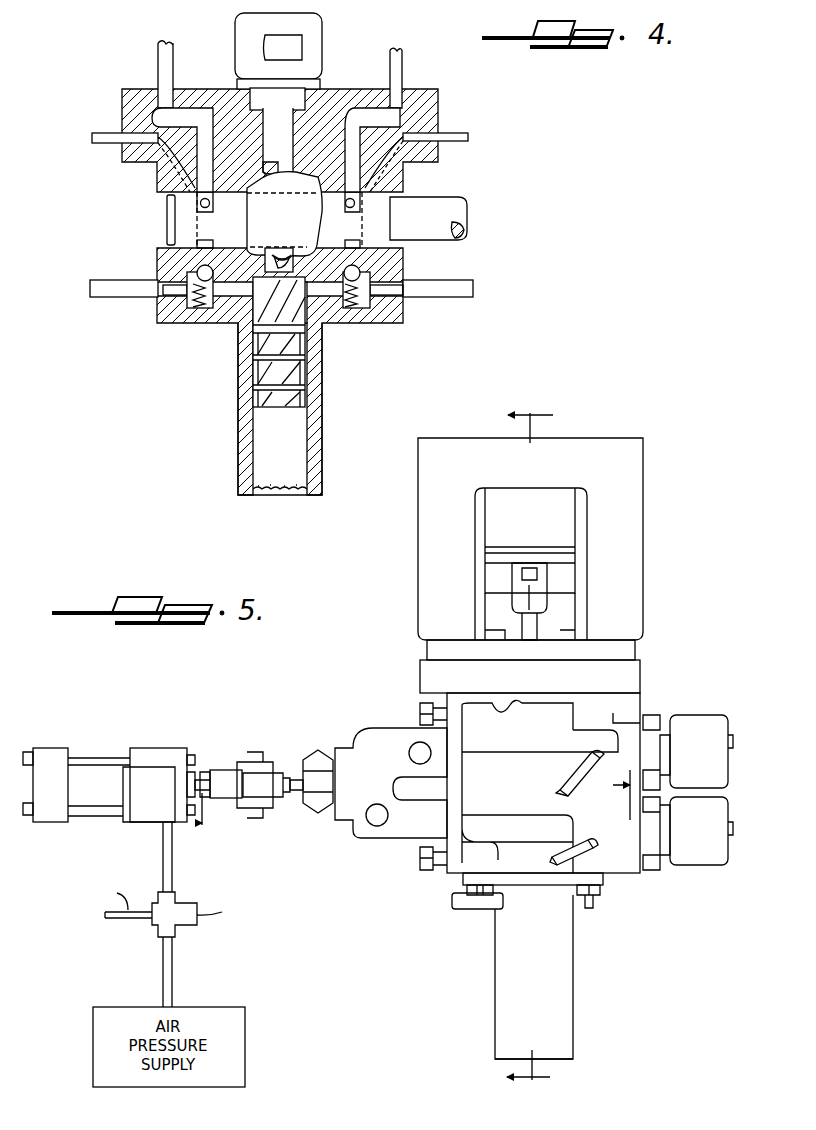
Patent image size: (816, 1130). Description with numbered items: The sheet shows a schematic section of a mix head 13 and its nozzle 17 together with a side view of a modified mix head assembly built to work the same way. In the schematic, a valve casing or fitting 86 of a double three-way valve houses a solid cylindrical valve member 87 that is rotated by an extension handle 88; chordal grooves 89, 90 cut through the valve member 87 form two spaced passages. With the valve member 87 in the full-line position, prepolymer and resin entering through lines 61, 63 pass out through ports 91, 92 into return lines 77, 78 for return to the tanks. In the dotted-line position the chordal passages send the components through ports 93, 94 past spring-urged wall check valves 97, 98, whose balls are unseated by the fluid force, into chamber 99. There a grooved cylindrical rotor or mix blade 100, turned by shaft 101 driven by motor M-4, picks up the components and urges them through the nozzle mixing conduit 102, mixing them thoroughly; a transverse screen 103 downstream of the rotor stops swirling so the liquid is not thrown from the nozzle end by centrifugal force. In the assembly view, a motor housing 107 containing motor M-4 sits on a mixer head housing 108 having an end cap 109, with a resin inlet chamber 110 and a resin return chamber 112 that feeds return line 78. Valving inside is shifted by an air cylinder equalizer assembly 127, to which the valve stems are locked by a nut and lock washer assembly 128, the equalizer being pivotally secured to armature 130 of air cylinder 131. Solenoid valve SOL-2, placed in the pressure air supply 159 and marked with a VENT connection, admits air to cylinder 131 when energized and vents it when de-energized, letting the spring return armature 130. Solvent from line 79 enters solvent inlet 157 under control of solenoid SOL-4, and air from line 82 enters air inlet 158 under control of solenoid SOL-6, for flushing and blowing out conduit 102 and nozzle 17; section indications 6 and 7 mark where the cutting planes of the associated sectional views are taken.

In FIG. 4, the mix head 13 is at (193, 330).
In FIG. 5, the mix head 13 is at (530, 783).
In FIG. 4, the nozzle 17 is at (330, 407).
In FIG. 5, the nozzle 17 is at (575, 978).
In FIG. 4, the line 61 is at (388, 84).
In FIG. 4, the line 63 is at (158, 62).
In FIG. 4, the return line 77 is at (450, 128).
In FIG. 4, the return line 78 is at (100, 133).
In FIG. 4, the line 79 is at (110, 297).
In FIG. 5, the line 79 is at (566, 786).
In FIG. 4, the line 82 is at (462, 297).
In FIG. 5, the line 82 is at (560, 852).
In FIG. 4, the valve casing or fitting 86 is at (210, 89).
In FIG. 4, the valve member 87 is at (292, 214).
In FIG. 4, the extension handle 88 is at (470, 216).
In FIG. 4, the chordal groove 89 is at (355, 205).
In FIG. 4, the chordal groove 90 is at (200, 208).
In FIG. 4, the port 91 is at (345, 203).
In FIG. 4, the port 92 is at (200, 203).
In FIG. 4, the port 93 is at (355, 256).
In FIG. 4, the port 94 is at (208, 254).
In FIG. 4, the wall check valve 97 is at (362, 270).
In FIG. 4, the wall check valve 98 is at (198, 272).
In FIG. 4, the chamber 99 is at (240, 296).
In FIG. 4, the mix blade 100 is at (257, 397).
In FIG. 4, the shaft 101 is at (277, 133).
In FIG. 5, the shaft 101 is at (535, 622).
In FIG. 4, the nozzle mixing conduit 102 is at (305, 352).
In FIG. 4, the transverse screen 103 is at (266, 492).
In FIG. 5, the transverse screen 103 is at (563, 1068).
In FIG. 5, the motor housing 107 is at (640, 514).
In FIG. 5, the mixer head housing 108 is at (425, 683).
In FIG. 5, the end cap 109 is at (345, 820).
In FIG. 5, the resin component inlet and inlet chamber 110 is at (420, 764).
In FIG. 5, the resin component outlet or return chamber 112 is at (386, 817).
In FIG. 5, the air cylinder equalizer assembly 127 is at (275, 760).
In FIG. 5, the nut and lock washer assembly 128 is at (293, 764).
In FIG. 5, the armature 130 is at (227, 770).
In FIG. 5, the air cylinder 131 is at (145, 812).
In FIG. 5, the solvent inlet 157 is at (590, 753).
In FIG. 5, the air inlet 158 is at (600, 855).
In FIG. 5, the pressure air supply 159 is at (165, 865).
In FIG. 5, the section line 6 is at (413, 808).
In FIG. 5, the section line 7 is at (516, 747).
In FIG. 4, the motor M-4 is at (318, 38).
In FIG. 5, the motor M-4 is at (531, 564).
In FIG. 5, the solenoid SOL-4 is at (688, 752).
In FIG. 5, the solenoid SOL-6 is at (688, 833).
In FIG. 5, the solenoid valve SOL-2 is at (214, 914).
In FIG. 5, the vent VENT is at (113, 902).